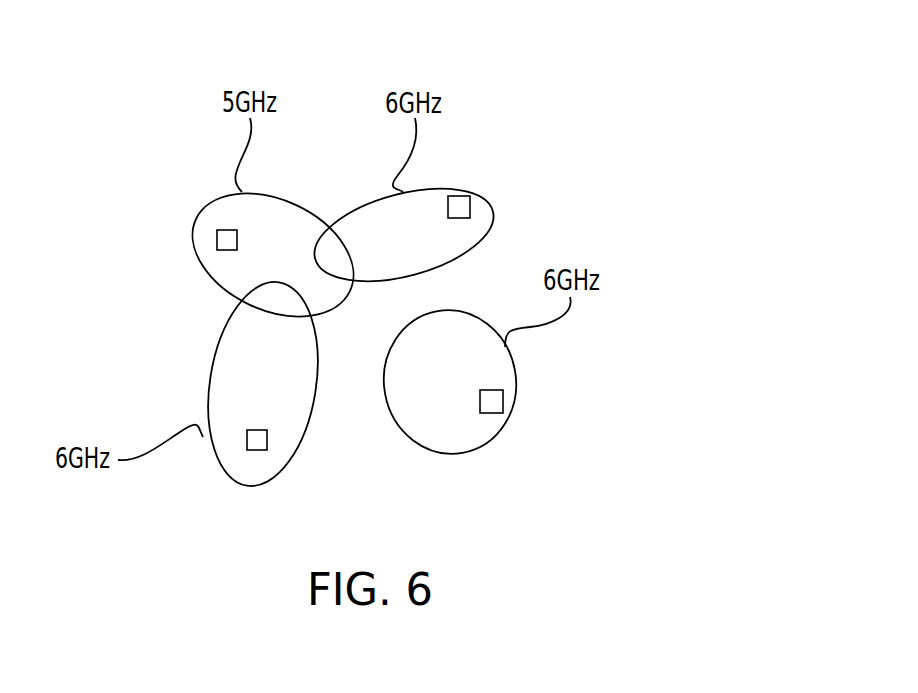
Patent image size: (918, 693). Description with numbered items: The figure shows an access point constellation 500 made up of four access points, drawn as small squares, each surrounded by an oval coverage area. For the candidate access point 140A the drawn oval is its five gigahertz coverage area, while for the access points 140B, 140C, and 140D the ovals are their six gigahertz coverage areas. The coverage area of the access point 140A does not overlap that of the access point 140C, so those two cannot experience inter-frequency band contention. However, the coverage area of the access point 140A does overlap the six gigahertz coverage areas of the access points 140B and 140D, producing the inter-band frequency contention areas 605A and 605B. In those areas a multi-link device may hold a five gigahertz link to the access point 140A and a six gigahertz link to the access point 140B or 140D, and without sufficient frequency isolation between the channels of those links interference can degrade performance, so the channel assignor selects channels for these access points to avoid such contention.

The constellation 500 is at (728, 153).
The access point 140A is at (217, 237).
The access point 140B is at (460, 193).
The access point 140C is at (503, 403).
The access point 140D is at (255, 450).
The inter-band frequency contention area 605A is at (330, 257).
The inter-band frequency contention area 605B is at (280, 300).